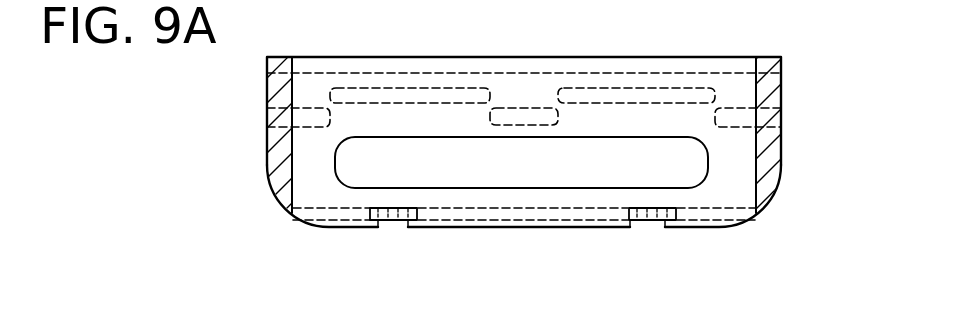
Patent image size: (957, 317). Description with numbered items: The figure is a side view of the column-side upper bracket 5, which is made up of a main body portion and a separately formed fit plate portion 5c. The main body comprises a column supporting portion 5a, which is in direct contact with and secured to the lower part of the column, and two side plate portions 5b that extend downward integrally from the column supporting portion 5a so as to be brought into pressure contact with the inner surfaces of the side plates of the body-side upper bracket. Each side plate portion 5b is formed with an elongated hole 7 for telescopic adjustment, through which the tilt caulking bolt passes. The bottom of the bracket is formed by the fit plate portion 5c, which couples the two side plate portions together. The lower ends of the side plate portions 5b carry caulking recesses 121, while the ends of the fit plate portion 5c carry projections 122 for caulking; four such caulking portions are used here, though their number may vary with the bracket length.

The column-side upper bracket 5 is at (796, 133).
The column supporting portion 5a is at (503, 228).
The side plate portion 5b is at (304, 162).
The fit plate portion 5c is at (562, 222).
The elongated hole for telescopic adjustment 7 is at (603, 137).
The caulking recess 121 is at (379, 226).
The projection for caulking 122 is at (401, 224).